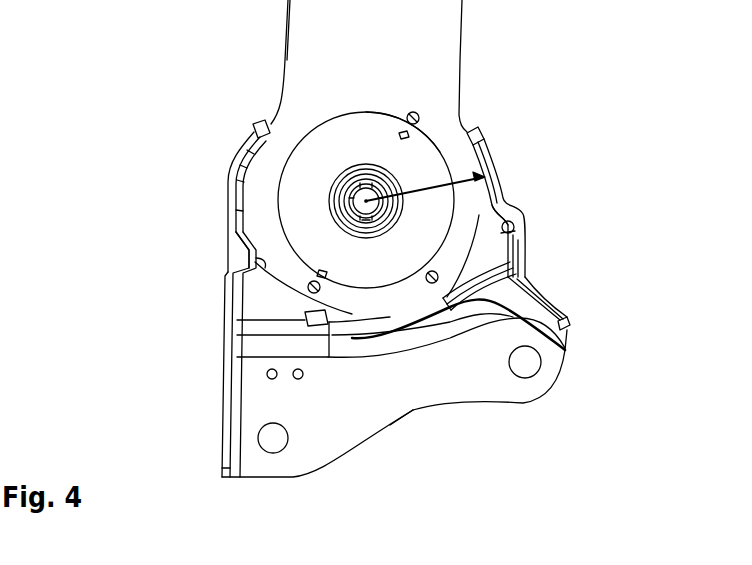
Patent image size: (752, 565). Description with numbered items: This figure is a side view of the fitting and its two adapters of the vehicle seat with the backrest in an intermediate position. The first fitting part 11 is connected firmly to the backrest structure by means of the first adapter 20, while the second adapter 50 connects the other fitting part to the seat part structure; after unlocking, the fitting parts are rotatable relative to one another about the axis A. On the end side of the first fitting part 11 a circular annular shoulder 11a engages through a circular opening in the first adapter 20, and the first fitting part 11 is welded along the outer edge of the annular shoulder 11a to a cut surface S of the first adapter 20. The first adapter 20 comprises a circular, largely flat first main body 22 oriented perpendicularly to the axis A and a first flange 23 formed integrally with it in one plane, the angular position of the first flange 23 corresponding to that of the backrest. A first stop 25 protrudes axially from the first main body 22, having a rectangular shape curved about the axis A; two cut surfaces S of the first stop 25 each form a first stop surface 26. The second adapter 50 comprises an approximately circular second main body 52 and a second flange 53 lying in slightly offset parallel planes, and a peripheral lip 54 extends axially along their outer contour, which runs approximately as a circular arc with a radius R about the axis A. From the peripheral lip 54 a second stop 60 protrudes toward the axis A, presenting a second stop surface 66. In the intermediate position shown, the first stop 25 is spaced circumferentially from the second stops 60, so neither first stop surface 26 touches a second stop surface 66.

The first fitting part 11 is at (417, 173).
The annular shoulder 11a is at (432, 145).
The first adapter 20 is at (295, 110).
The first main body 22 is at (270, 160).
The first flange 23 is at (327, 60).
The first stop 25 is at (407, 330).
The first stop surface 26 is at (565, 350).
The second adapter 50 is at (502, 380).
The second main body 52 is at (487, 252).
The second flange 53 is at (337, 403).
The peripheral lip 54 is at (223, 405).
The second stop 60 is at (232, 263).
The second stop surface 66 is at (257, 270).
The axis A is at (366, 201).
The radius R is at (440, 222).
The cut surface S is at (227, 373).